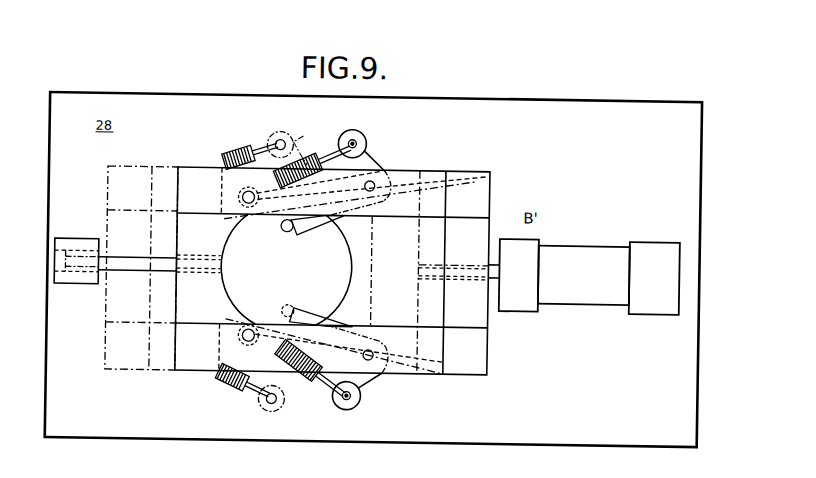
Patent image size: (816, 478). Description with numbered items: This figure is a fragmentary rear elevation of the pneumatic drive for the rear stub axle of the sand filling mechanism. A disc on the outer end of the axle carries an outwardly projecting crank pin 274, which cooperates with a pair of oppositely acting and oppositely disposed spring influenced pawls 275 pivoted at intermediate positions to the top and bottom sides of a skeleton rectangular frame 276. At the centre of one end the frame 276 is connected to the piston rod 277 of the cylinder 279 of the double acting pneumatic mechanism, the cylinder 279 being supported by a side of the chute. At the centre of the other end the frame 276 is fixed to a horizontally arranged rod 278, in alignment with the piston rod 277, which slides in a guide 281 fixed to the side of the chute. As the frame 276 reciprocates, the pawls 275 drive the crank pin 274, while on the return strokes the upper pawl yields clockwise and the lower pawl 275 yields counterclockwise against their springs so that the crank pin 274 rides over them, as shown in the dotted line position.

The crank pin 274 is at (294, 304).
The spring influenced pawls 275 is at (308, 419).
The skeleton rectangular frame 276 is at (491, 167).
The piston rod 277 is at (495, 278).
The horizontally arranged rod 278 is at (136, 258).
The cylinder 279 is at (599, 241).
The guide 281 is at (85, 240).